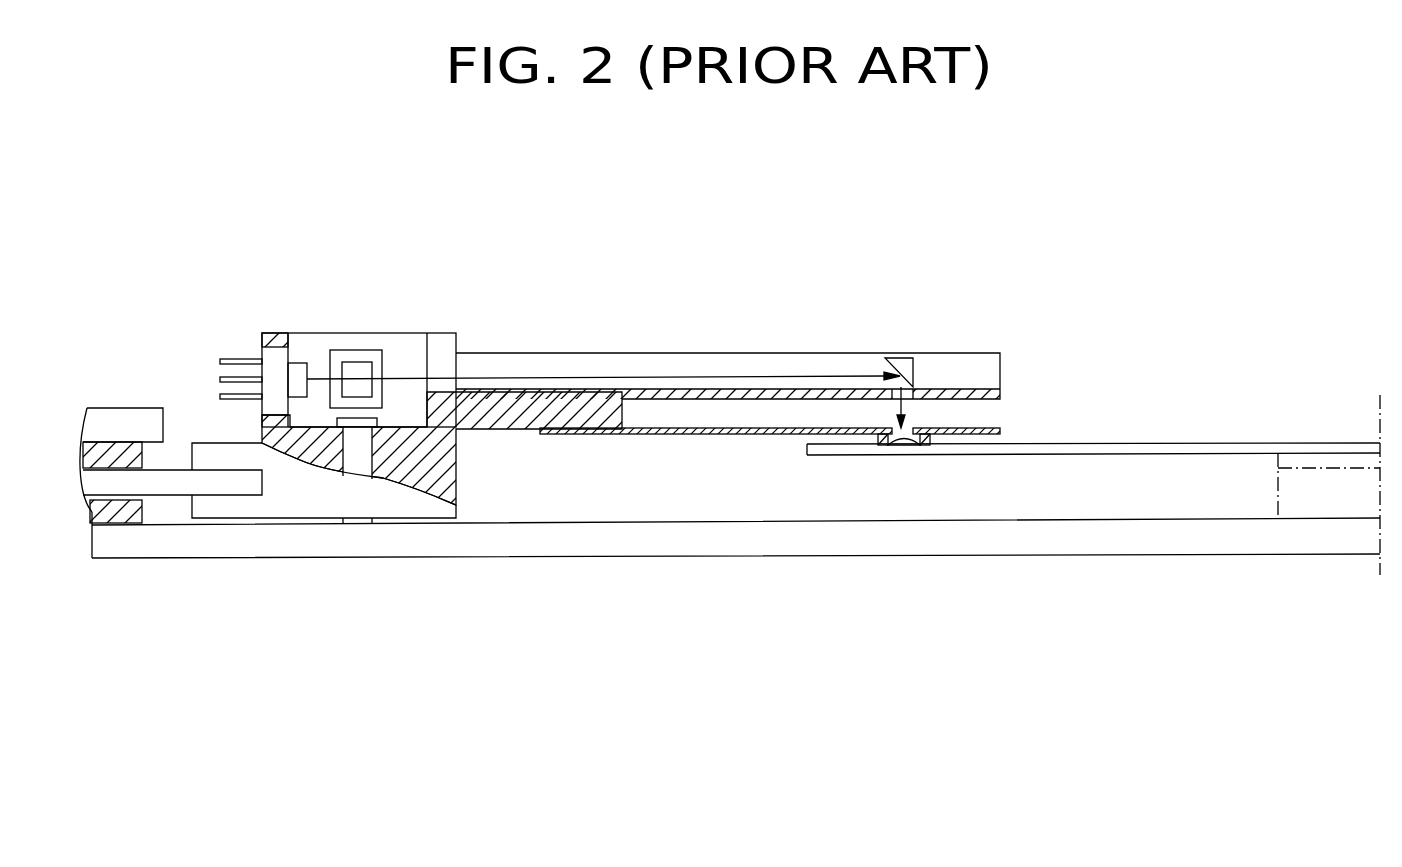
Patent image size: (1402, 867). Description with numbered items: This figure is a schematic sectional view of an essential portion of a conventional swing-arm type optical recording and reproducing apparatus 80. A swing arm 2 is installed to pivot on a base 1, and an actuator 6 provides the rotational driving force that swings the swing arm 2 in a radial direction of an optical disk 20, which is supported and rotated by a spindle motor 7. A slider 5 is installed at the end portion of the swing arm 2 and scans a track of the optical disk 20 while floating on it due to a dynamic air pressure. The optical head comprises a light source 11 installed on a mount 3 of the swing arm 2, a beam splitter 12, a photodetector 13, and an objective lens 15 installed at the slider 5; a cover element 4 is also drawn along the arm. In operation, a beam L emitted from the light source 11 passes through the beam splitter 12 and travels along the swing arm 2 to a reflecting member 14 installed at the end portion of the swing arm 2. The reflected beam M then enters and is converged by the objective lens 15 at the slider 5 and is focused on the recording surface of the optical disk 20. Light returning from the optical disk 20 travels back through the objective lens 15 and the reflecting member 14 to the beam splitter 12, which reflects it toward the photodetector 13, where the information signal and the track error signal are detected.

The base 1 is at (555, 555).
The swing arm 2 is at (727, 360).
The mount 3 is at (262, 423).
The cover strip 4 is at (713, 435).
The slider 5 is at (947, 442).
The actuator 6 is at (155, 382).
The spindle motor 7 is at (1320, 495).
The light source 11 is at (270, 363).
The beam splitter 12 is at (362, 368).
The photodetector 13 is at (343, 357).
The reflecting member 14 is at (903, 357).
The objective lens 15 is at (903, 445).
The optical disk 20 is at (1058, 455).
The swing-arm type optical recording and reproducing apparatus 80 is at (1267, 757).
The beam L is at (634, 378).
The reflected beam M is at (907, 405).